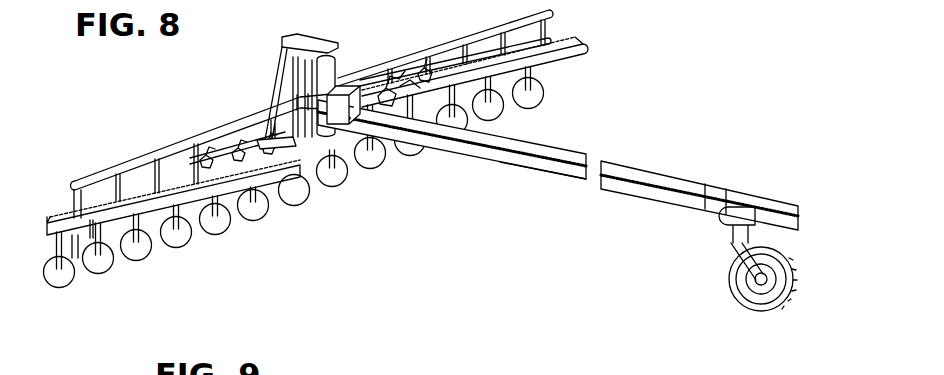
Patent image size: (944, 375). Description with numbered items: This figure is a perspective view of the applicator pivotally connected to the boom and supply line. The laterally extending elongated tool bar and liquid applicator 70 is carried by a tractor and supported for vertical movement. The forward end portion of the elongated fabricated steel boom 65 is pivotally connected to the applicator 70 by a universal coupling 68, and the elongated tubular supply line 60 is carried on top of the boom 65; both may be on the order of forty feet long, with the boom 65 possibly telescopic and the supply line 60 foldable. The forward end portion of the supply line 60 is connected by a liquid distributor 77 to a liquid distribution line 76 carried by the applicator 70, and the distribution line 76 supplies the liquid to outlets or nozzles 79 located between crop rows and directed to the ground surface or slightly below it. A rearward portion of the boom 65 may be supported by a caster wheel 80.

The supply line 60 is at (618, 175).
The boom 65 is at (546, 180).
The universal coupling 68 is at (340, 181).
The tool bar and liquid applicator 70 is at (180, 256).
The liquid distribution line 76 is at (172, 147).
The liquid distributor 77 is at (344, 84).
The nozzles 79 is at (73, 186).
The caster wheel 80 is at (766, 319).